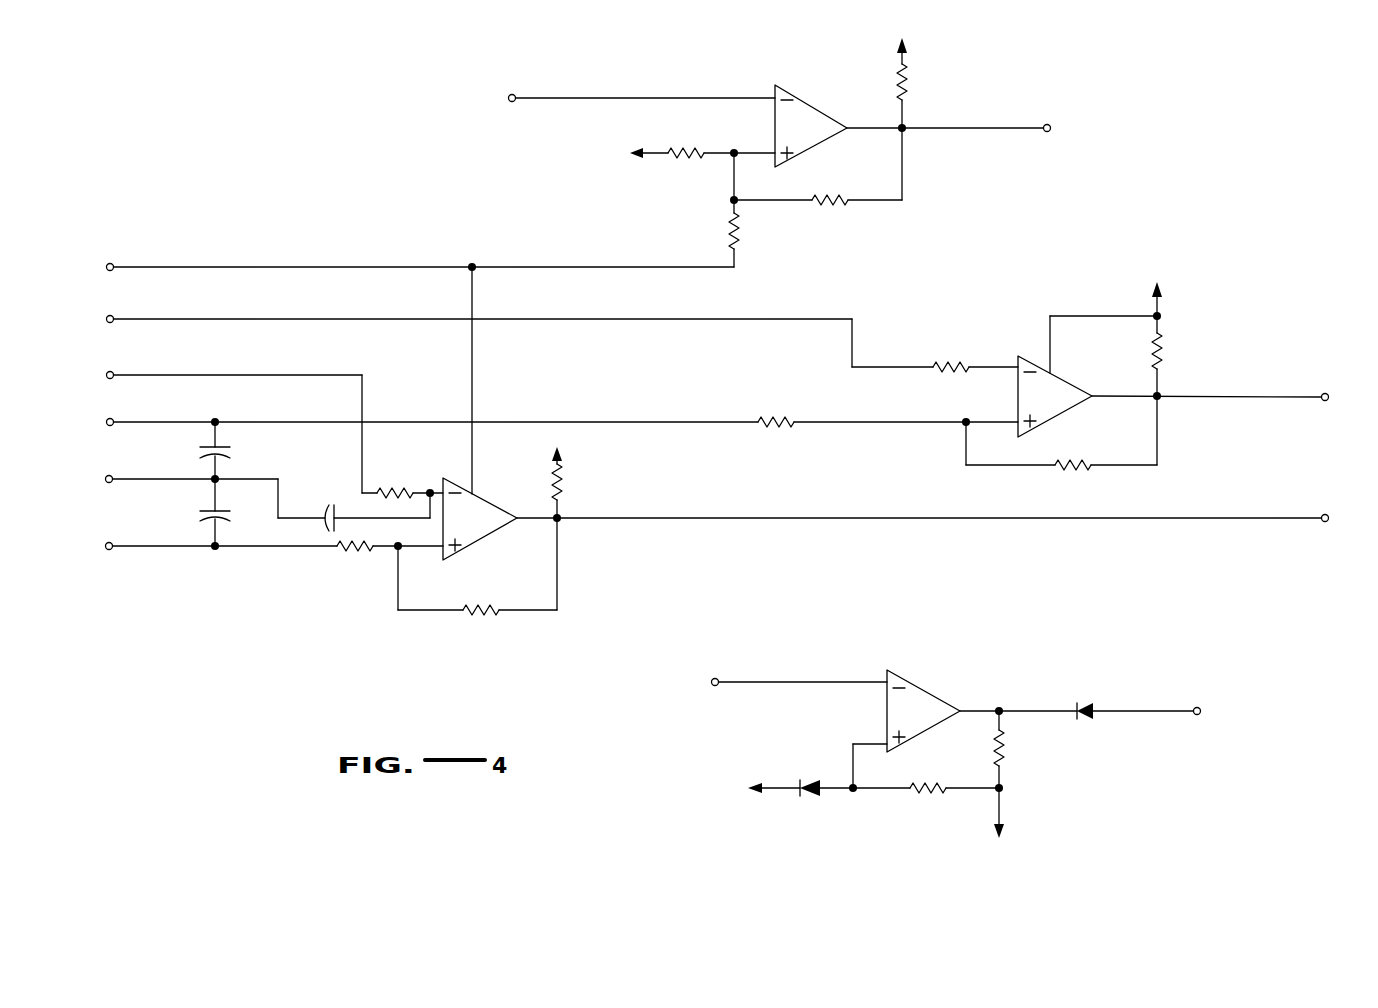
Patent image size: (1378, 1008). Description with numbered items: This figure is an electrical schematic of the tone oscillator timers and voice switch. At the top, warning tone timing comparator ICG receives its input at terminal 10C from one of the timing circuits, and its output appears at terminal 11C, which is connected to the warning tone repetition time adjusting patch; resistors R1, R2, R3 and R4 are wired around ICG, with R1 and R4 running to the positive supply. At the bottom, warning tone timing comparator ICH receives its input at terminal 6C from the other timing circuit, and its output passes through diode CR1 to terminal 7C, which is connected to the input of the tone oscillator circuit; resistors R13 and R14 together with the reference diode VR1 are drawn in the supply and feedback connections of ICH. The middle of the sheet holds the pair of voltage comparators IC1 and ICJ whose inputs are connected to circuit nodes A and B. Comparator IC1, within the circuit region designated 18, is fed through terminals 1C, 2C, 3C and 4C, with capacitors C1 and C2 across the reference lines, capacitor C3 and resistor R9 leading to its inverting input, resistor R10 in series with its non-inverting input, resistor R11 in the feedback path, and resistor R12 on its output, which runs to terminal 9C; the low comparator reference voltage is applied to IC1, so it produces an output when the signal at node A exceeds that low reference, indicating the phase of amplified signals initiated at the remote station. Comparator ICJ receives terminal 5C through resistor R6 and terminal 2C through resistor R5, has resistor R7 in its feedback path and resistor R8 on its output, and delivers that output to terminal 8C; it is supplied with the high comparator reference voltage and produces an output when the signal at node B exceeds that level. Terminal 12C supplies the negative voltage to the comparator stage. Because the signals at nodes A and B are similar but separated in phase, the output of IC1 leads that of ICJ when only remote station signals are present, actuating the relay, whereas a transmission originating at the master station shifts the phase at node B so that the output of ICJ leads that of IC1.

The resistor R1 is at (681, 142).
The resistor R2 is at (717, 240).
The resistor R3 is at (818, 166).
The resistor R4 is at (914, 70).
The resistor R5 is at (888, 409).
The resistor R6 is at (935, 352).
The resistor R7 is at (1059, 433).
The resistor R8 is at (1122, 325).
The resistor R9 is at (402, 479).
The resistor R10 is at (390, 560).
The resistor R11 is at (477, 566).
The resistor R12 is at (571, 471).
The resistor R13 is at (1015, 788).
The resistance R14 is at (924, 768).
The capacitor C1 is at (230, 450).
The capacitor C2 is at (231, 512).
The capacitor C3 is at (369, 505).
The warning tone timing comparator ICG is at (811, 126).
The voltage comparator ICJ is at (1055, 396).
The voltage comparator IC1 is at (480, 519).
The warning tone timing comparator ICH is at (923, 711).
The diode CR1 is at (1076, 695).
The voltage reference diode VR1 is at (775, 806).
The terminal 1C is at (200, 483).
The terminal 2C is at (415, 415).
The terminal 3C is at (203, 537).
The terminal 4C is at (217, 421).
The terminal 5C is at (464, 330).
The terminal 6C is at (785, 682).
The terminal 7C is at (1213, 711).
The terminal 8C is at (1226, 397).
The terminal 9C is at (939, 518).
The terminal 10C is at (621, 98).
The terminal 11C is at (966, 128).
The terminal 12C is at (398, 261).
The amplifier circuit 18 is at (540, 639).